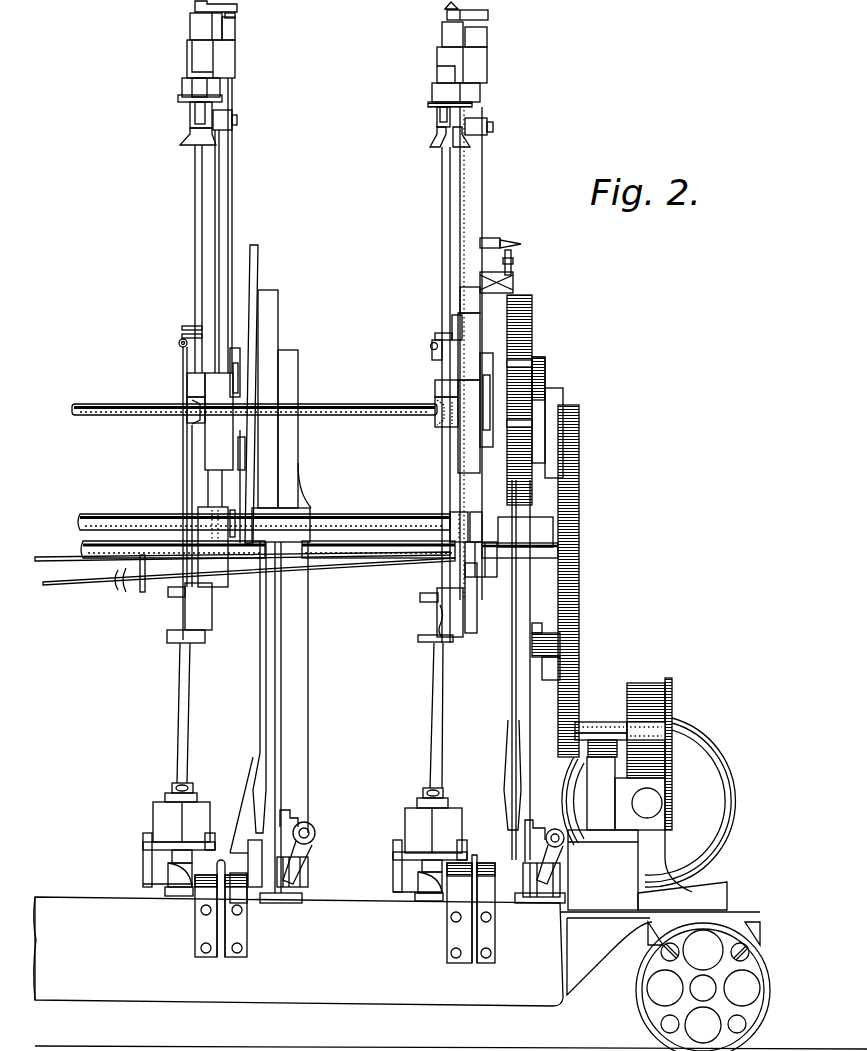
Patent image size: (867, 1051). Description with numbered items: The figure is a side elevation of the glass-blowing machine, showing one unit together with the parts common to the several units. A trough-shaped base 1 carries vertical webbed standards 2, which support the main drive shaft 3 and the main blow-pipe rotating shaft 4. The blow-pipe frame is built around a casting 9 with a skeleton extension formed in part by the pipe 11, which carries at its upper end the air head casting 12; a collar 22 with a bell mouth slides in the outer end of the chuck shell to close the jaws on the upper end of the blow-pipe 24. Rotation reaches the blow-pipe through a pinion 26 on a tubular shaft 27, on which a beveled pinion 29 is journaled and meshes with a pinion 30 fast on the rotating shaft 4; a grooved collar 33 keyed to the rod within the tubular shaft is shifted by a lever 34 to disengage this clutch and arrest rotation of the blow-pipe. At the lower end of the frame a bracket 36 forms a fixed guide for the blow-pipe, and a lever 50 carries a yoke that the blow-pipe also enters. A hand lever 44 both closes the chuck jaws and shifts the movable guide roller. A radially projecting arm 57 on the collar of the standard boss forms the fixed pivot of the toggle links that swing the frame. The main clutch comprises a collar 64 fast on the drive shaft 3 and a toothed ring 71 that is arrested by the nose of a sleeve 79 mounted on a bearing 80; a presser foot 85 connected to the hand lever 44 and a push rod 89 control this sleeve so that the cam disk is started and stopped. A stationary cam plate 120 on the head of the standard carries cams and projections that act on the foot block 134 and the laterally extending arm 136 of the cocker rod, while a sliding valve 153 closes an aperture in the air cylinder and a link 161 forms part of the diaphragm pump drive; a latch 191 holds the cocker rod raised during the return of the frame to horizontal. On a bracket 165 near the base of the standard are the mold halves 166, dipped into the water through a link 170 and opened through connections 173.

The trough-shaped base 1 is at (376, 967).
The vertical webbed standards 2 is at (536, 446).
The main drive shaft 3 is at (369, 530).
The main blow-pipe rotating shaft 4 is at (381, 416).
The blow-pipe frame casting 9 is at (470, 455).
The pipe 11 is at (474, 176).
The air head casting 12 is at (472, 70).
The collar 22 is at (434, 140).
The blow-pipe 24 is at (434, 731).
The pinion 26 is at (481, 103).
The tubular shaft 27 is at (445, 226).
The beveled pinion 29 is at (440, 397).
The pinion 30 is at (447, 420).
The grooved collar 33 is at (440, 337).
The lever 34 is at (455, 328).
The bracket 36 is at (432, 642).
The hand lever 44 is at (494, 127).
The lever 50 is at (437, 618).
The radially projecting arm 57 is at (483, 433).
The collar 64 is at (455, 520).
The ring 71 is at (490, 525).
The sleeve 79 is at (481, 570).
The bearing 80 is at (397, 559).
The clutch actuating presser foot 85 is at (490, 239).
The push rod 89 is at (338, 570).
The stationary cam plate 120 is at (521, 334).
The foot block 134 is at (513, 288).
The laterally extending arm 136 is at (514, 266).
The sliding valve 153 is at (468, 624).
The link 161 is at (436, 367).
The bracket 165 is at (483, 942).
The mold halves 166 is at (420, 808).
The link 170 is at (511, 700).
The connections 173 is at (532, 832).
The latch 191 is at (515, 246).